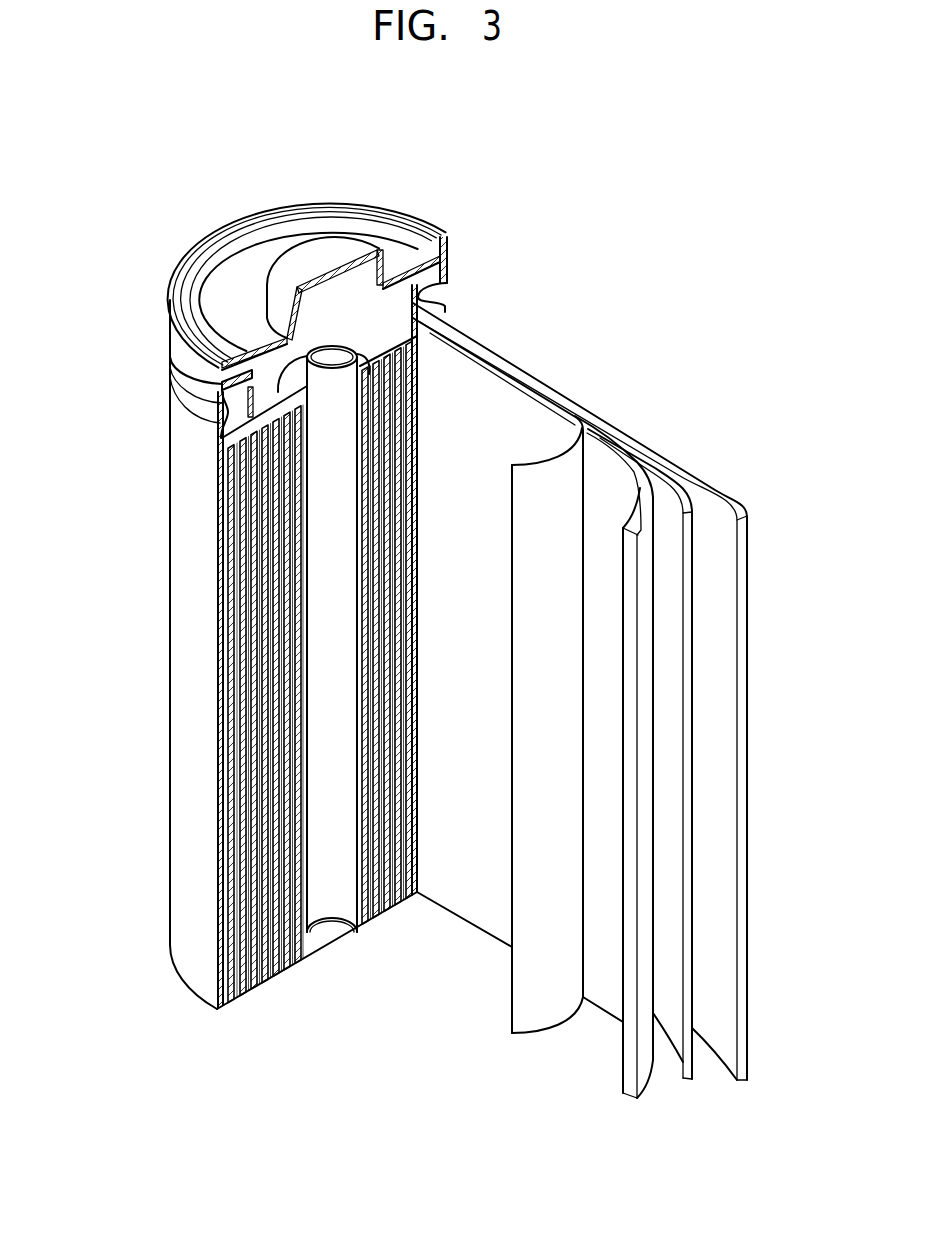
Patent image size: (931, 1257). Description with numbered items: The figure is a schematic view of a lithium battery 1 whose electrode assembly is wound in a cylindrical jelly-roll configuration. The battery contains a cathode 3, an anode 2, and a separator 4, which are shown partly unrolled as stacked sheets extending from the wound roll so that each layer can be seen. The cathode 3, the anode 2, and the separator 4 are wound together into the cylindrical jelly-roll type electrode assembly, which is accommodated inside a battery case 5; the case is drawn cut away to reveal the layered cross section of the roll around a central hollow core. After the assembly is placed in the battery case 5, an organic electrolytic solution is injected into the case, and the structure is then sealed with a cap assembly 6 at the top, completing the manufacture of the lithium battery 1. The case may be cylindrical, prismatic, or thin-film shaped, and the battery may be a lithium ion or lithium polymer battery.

The lithium battery 1 is at (545, 238).
The anode 2 is at (735, 492).
The cathode 3 is at (610, 440).
The separator 4 is at (518, 385).
The battery case 5 is at (182, 657).
The cap assembly 6 is at (303, 253).